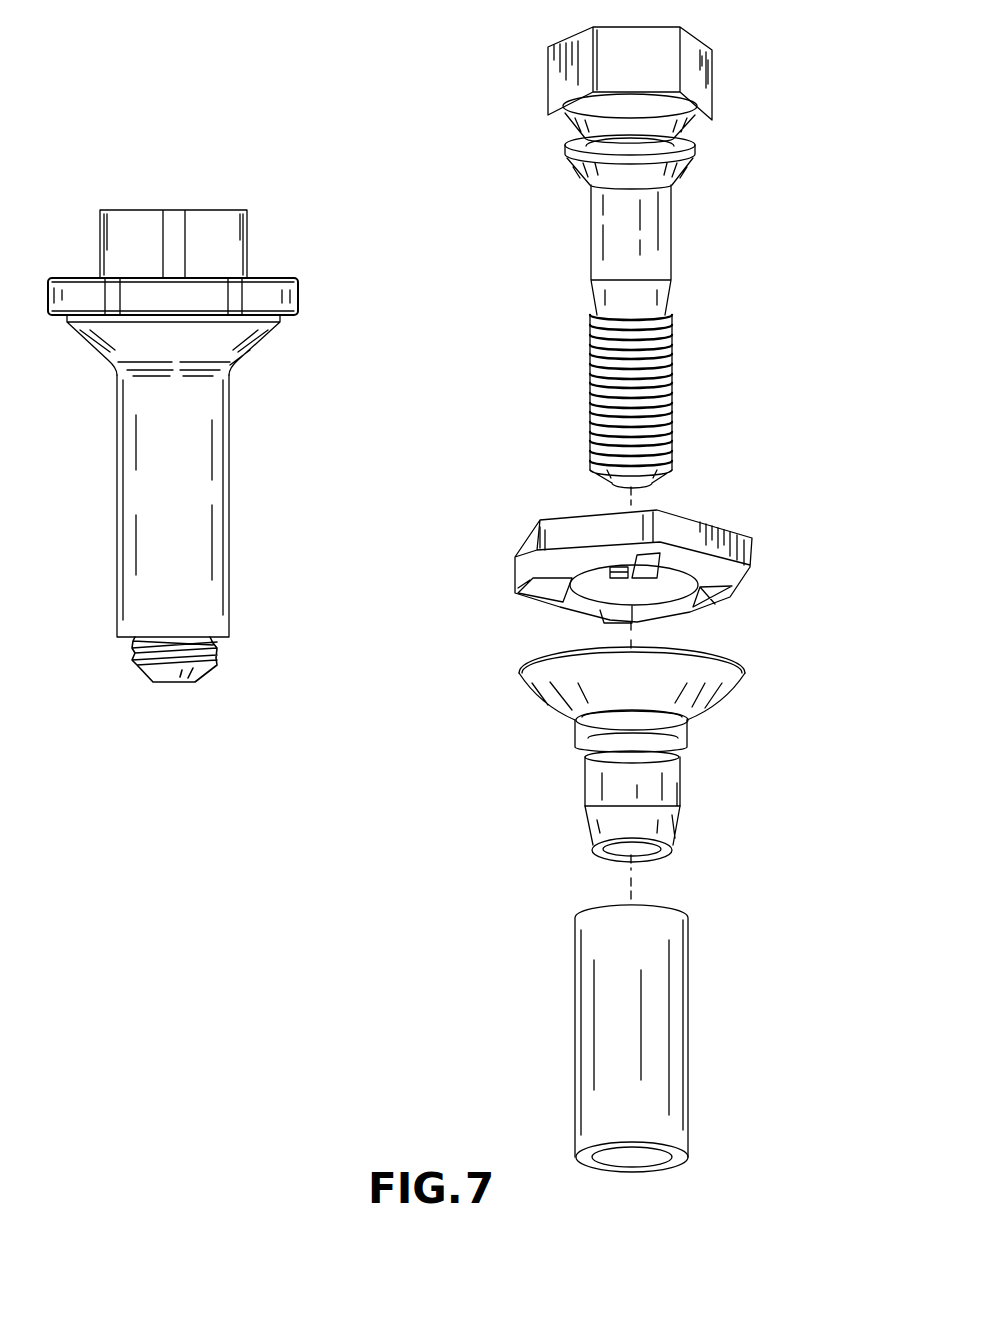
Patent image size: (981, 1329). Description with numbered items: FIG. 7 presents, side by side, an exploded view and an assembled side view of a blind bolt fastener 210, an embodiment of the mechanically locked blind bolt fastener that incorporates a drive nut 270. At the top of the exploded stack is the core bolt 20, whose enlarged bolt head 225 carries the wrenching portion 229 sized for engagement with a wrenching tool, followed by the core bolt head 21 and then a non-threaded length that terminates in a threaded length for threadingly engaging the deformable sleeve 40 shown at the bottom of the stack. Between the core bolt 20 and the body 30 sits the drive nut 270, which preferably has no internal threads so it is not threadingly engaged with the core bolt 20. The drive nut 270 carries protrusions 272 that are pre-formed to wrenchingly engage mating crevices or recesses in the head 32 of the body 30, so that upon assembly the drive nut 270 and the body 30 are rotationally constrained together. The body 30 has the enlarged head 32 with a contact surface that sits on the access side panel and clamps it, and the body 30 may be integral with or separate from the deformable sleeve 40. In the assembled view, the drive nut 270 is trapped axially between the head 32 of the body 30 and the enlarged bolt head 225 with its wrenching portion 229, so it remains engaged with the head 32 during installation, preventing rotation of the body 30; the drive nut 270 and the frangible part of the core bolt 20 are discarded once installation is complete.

The blind bolt fastener 210 is at (258, 516).
The core bolt 20 is at (635, 257).
The core bolt head 21 is at (697, 157).
The enlarged bolt head 225 is at (547, 78).
The wrenching portion 229 is at (702, 72).
The drive nut 270 is at (452, 436).
The protrusions 272 is at (733, 600).
The body 30 is at (459, 588).
The head 32 is at (745, 675).
The deformable sleeve 40 is at (687, 1037).